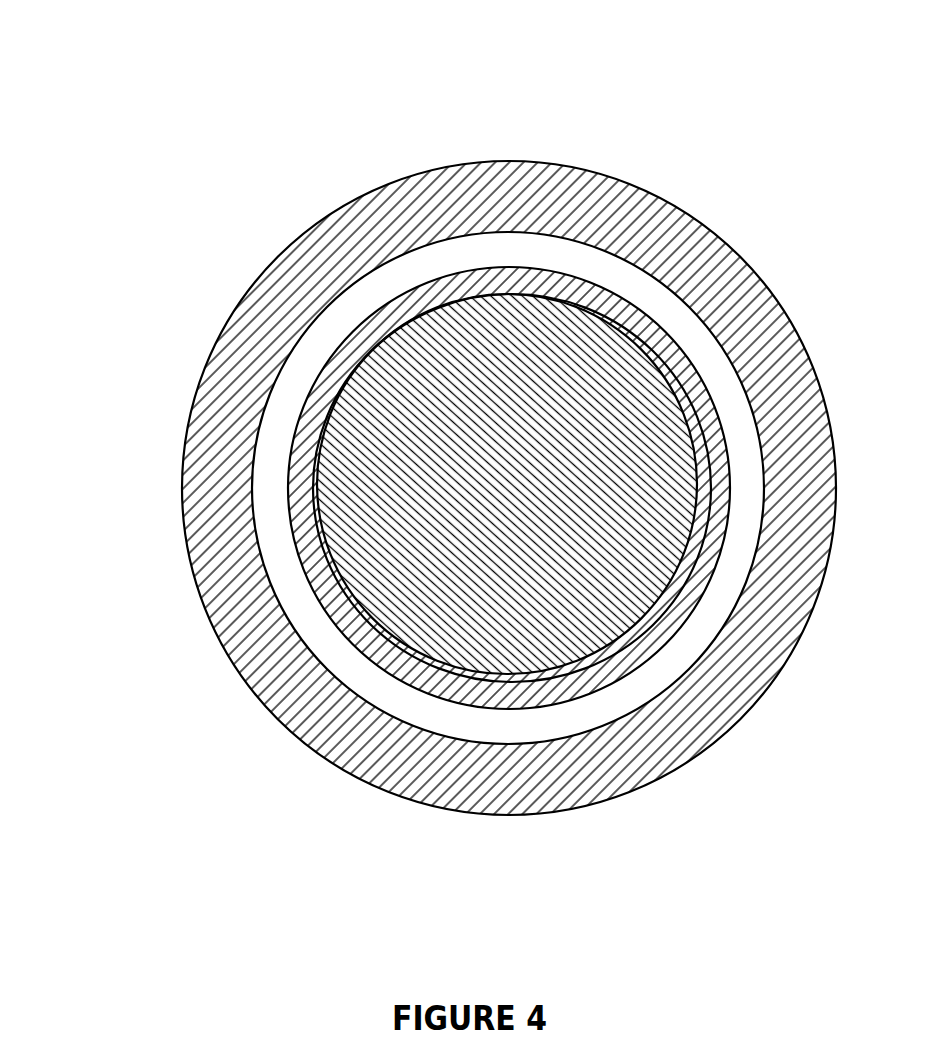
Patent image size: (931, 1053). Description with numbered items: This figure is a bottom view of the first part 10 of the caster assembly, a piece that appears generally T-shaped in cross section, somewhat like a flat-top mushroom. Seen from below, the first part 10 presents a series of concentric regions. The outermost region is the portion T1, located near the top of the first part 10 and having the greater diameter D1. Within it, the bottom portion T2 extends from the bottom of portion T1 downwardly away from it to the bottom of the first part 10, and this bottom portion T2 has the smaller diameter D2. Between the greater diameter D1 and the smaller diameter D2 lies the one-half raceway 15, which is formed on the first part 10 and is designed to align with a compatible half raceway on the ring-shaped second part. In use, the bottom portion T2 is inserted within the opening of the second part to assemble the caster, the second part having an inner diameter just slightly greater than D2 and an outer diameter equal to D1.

The first part 10 is at (295, 230).
The one-half raceway 15 is at (463, 253).
The greater diameter D1 is at (217, 338).
The top portion T1 is at (210, 452).
The bottom portion T2 is at (433, 477).
The diameter of bottom portion D2 is at (340, 587).